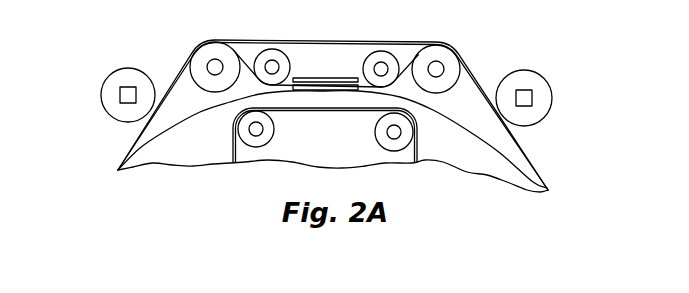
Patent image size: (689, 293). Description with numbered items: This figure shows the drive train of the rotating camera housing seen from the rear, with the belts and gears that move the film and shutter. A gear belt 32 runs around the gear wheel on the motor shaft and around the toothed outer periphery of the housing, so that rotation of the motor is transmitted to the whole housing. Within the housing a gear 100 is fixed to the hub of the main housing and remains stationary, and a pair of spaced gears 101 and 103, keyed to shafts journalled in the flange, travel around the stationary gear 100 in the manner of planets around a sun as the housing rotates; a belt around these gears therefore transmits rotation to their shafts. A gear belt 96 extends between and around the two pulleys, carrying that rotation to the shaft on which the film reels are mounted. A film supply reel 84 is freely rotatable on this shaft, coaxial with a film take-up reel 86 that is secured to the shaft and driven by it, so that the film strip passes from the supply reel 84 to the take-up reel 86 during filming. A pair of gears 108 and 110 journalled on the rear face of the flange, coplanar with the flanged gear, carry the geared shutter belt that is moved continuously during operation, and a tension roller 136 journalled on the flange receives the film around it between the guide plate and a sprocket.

The gear belt 32 is at (186, 44).
The film supply reel 84 is at (117, 79).
The film take-up reel 86 is at (533, 78).
The gear belt 96 is at (416, 143).
The gear 100 is at (252, 93).
The gear 101 is at (211, 52).
The gear 103 is at (438, 52).
The gear 108 is at (243, 132).
The gear 110 is at (387, 136).
The tension roller 136 is at (381, 62).